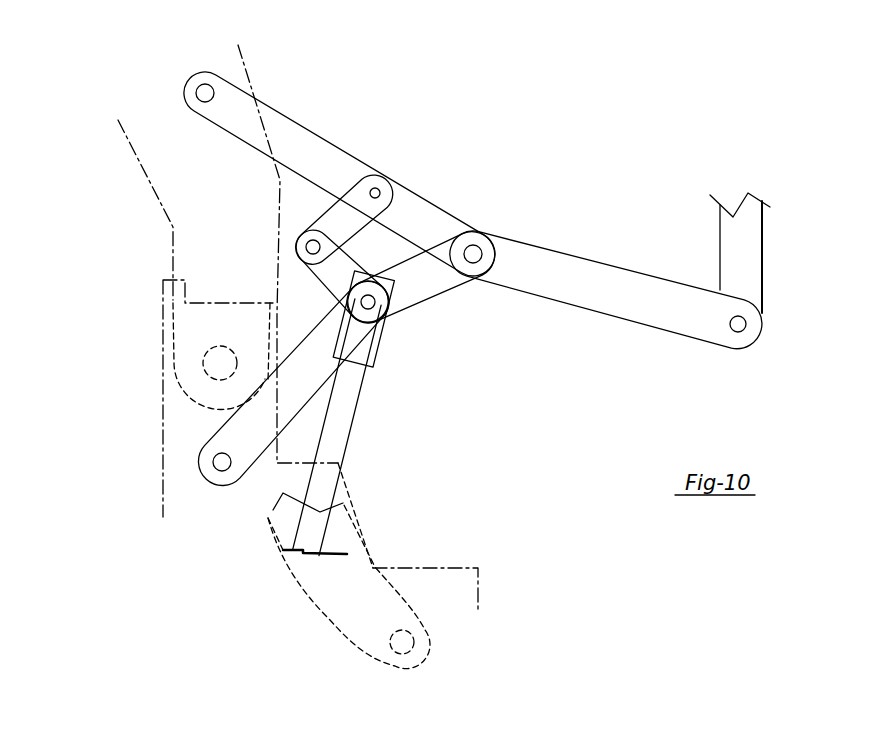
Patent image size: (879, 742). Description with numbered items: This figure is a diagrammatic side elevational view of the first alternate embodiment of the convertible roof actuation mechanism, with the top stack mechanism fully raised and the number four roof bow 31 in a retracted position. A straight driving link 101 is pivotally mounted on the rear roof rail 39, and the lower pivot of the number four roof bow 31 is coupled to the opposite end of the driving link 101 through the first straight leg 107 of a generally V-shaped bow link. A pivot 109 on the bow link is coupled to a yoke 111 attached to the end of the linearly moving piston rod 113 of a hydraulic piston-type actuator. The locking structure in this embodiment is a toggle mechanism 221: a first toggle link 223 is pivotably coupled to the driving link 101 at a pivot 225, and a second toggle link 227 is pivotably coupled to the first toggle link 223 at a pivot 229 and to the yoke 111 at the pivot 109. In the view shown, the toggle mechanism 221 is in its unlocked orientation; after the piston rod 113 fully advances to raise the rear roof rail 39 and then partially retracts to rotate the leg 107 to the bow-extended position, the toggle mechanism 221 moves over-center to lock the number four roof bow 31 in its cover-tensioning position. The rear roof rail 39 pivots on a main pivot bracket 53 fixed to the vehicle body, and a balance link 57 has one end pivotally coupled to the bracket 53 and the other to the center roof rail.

The driving link 101 is at (293, 148).
The first straight leg of bow link 107 is at (617, 287).
The number four roof bow 31 is at (740, 247).
The second toggle link 227 is at (388, 236).
The first toggle link 223 is at (347, 226).
The pivot 225 is at (380, 193).
The toggle mechanism 221 is at (300, 225).
The pivot 229 is at (306, 247).
The pivot 109 is at (375, 302).
The yoke 111 is at (367, 356).
The piston rod 113 is at (340, 428).
The rear roof rail 39 is at (160, 178).
The main pivot bracket 53 is at (177, 443).
The balance link 57 is at (347, 615).